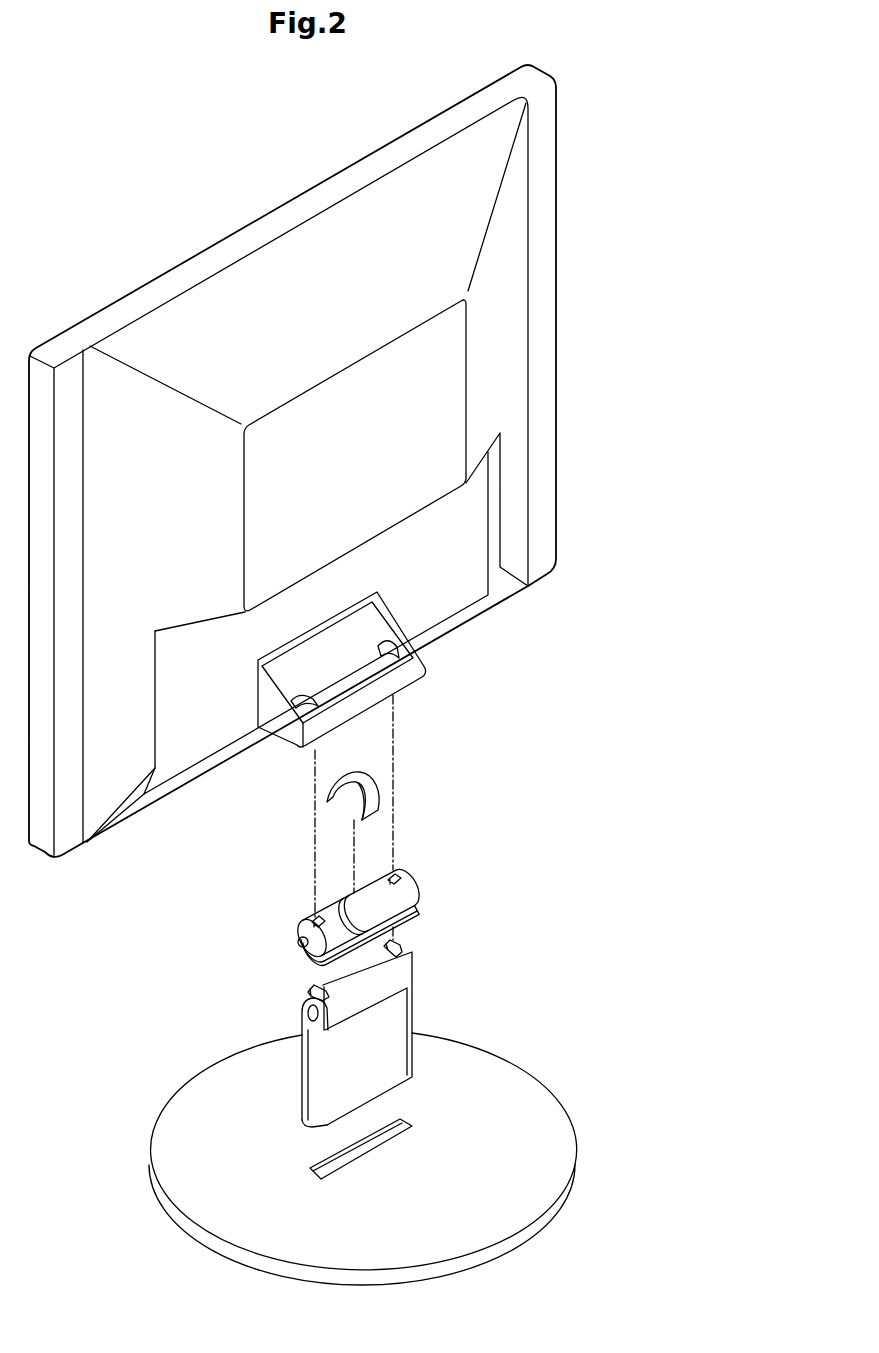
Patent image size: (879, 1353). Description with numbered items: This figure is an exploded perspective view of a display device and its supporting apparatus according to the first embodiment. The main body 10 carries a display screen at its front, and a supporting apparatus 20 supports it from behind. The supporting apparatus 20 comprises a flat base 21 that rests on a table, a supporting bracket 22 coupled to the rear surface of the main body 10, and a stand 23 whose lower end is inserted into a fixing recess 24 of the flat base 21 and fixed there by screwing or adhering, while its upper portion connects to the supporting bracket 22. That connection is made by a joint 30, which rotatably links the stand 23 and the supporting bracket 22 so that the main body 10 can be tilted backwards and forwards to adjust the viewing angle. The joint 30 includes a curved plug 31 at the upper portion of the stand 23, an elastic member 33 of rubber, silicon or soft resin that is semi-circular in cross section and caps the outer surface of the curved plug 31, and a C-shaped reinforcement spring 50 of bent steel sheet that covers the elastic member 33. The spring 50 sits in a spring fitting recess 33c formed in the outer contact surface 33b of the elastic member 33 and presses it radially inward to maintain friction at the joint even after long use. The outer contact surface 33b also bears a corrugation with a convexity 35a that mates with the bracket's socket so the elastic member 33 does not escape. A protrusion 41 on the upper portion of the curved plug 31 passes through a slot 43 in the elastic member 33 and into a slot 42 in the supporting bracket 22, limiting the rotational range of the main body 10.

The main body 10 is at (507, 338).
The supporting apparatus 20 is at (363, 1118).
The flat base 21 is at (527, 1110).
The supporting bracket 22 is at (362, 623).
The stand 23 is at (390, 1027).
The fixing recess 24 is at (399, 1122).
The joint 30 is at (360, 896).
The curved plug 31 is at (400, 966).
The elastic member 33 is at (294, 943).
The outer contact surface 33b is at (383, 880).
The spring fitting recess 33c is at (353, 893).
The convexity 35a is at (413, 906).
The protrusion 41 is at (307, 997).
The slot 42 is at (303, 697).
The slot 43 is at (312, 917).
The reinforcement spring 50 is at (367, 783).